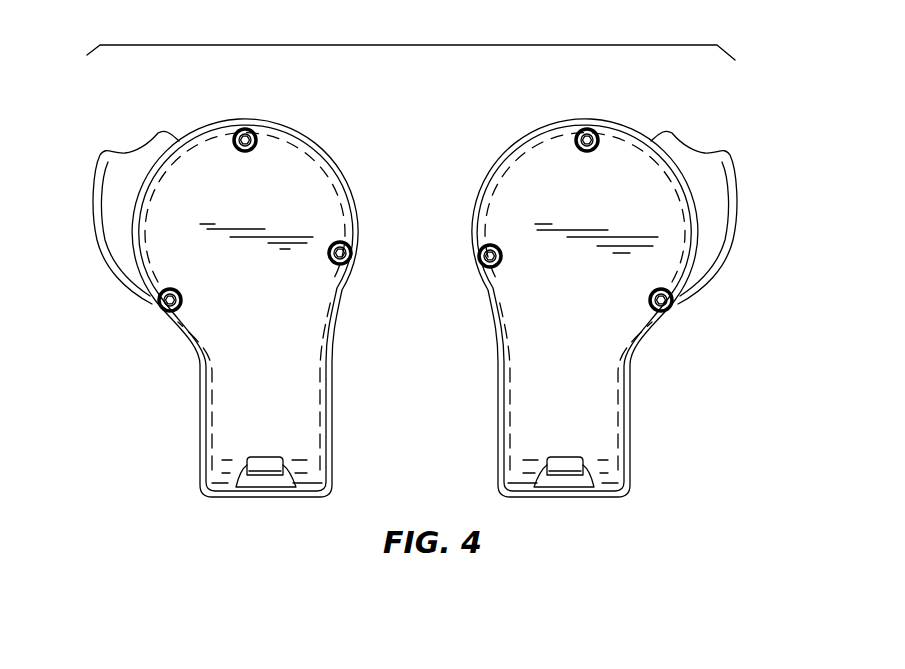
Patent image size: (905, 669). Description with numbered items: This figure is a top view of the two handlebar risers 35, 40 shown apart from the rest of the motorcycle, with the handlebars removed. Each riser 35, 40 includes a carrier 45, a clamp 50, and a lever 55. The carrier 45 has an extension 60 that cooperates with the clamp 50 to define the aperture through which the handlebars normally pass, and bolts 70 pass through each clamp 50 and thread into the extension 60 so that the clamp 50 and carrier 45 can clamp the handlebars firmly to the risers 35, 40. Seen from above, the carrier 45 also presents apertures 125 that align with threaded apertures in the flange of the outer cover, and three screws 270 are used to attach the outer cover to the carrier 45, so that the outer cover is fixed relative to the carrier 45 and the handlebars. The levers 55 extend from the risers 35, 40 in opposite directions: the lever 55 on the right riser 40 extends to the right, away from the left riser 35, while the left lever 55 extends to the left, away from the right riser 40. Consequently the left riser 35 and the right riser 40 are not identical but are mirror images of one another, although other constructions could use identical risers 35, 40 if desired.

The left riser 35 is at (297, 99).
The right riser 40 is at (659, 99).
The carrier 45 is at (278, 207).
The clamp 50 is at (209, 493).
The lever 55 is at (109, 219).
The extension 60 is at (320, 397).
The bolts 70 is at (265, 474).
The apertures 125 is at (258, 142).
The screws 270 is at (352, 256).